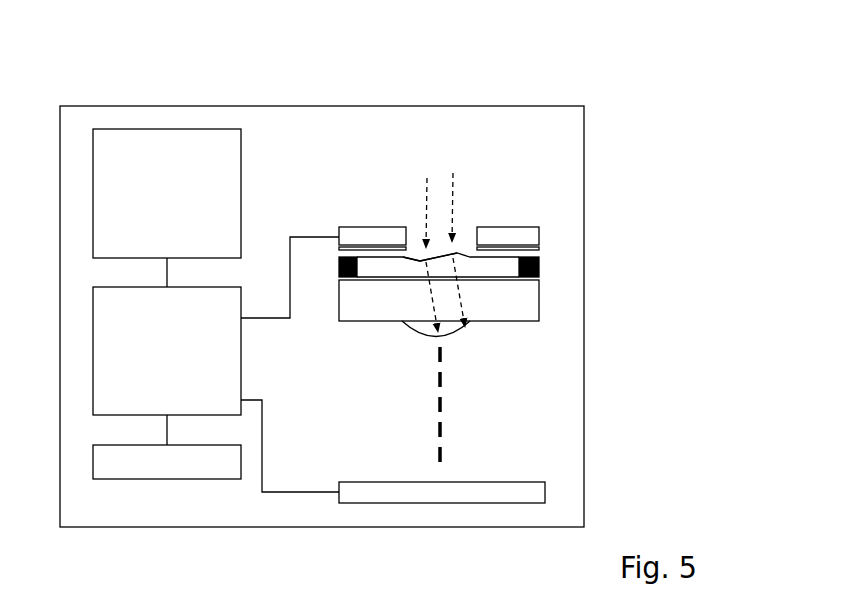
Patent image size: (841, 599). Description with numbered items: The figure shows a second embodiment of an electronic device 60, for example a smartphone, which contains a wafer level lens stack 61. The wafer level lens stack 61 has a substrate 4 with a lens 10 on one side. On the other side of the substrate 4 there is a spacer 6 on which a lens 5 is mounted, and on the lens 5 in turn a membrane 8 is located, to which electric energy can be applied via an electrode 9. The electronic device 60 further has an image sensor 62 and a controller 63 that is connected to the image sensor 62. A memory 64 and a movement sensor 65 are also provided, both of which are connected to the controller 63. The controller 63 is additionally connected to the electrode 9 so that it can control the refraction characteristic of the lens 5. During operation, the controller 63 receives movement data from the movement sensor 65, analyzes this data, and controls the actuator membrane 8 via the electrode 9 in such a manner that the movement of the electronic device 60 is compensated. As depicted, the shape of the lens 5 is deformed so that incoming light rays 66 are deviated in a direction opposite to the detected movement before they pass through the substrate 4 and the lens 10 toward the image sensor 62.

The substrate 4 is at (540, 308).
The lens 5 is at (464, 247).
The spacer 6 is at (540, 266).
The membrane 8 is at (418, 257).
The electrode 9 is at (353, 227).
The lens 10 is at (462, 328).
The electronic device 60 is at (555, 106).
The wafer level lens stack 61 is at (493, 195).
The image sensor 62 is at (545, 491).
The controller 63 is at (155, 360).
The memory 64 is at (155, 472).
The movement sensor 65 is at (155, 202).
The incoming light rays 66 is at (461, 173).